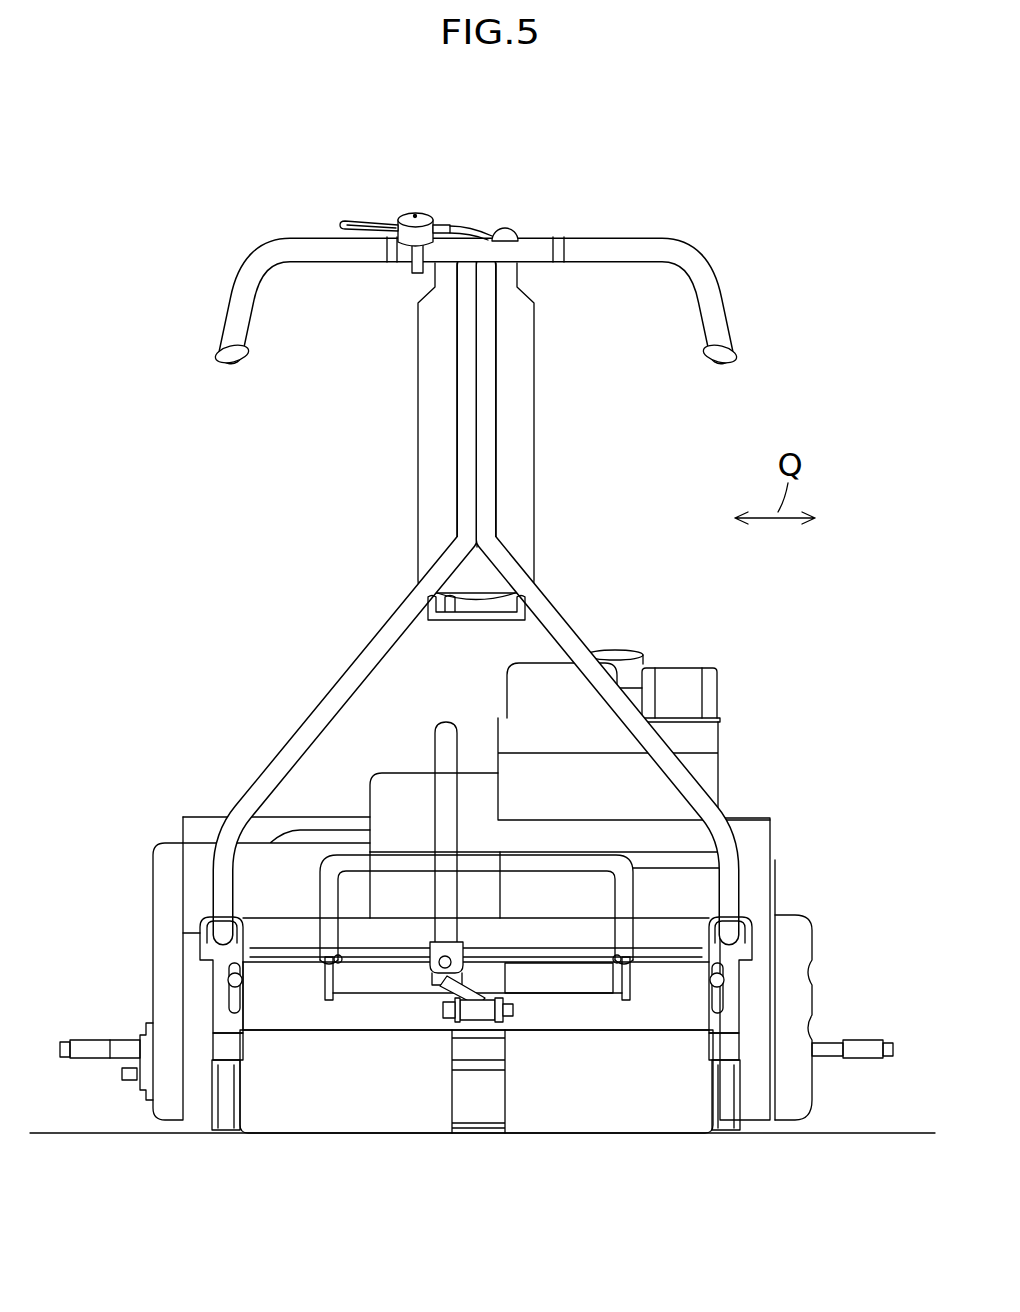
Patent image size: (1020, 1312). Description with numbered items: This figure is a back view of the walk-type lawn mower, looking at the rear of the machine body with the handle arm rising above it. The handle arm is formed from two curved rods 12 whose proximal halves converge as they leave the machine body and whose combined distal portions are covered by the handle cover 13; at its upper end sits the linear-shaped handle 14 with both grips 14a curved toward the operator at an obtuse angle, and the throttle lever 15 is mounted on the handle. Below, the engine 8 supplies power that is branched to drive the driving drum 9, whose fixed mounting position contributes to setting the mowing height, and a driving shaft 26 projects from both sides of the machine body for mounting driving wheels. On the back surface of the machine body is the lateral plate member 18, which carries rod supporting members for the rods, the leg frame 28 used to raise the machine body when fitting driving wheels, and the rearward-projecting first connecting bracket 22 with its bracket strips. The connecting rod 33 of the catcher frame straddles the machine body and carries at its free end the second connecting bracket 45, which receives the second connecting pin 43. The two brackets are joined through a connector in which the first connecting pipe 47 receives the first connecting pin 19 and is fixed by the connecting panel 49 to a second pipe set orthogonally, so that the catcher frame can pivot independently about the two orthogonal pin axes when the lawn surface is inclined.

The engine 8 is at (685, 680).
The driving drum 9 is at (337, 1118).
The curved rods 12 is at (562, 637).
The handle cover 13 is at (537, 400).
The handle 14 is at (603, 247).
The grips 14a is at (225, 330).
The throttle lever 15 is at (355, 222).
The lateral plate member 18 is at (345, 1040).
The first connecting pin 19 is at (513, 1010).
The first connecting bracket 22 is at (500, 1020).
The driving shaft 26 is at (93, 1047).
The leg frame 28 is at (350, 862).
The connecting rod 33 is at (440, 752).
The second connecting pin 43 is at (450, 957).
The second connecting bracket 45 is at (430, 945).
The first connecting pipe 47 is at (478, 1018).
The connecting panel 49 is at (437, 993).